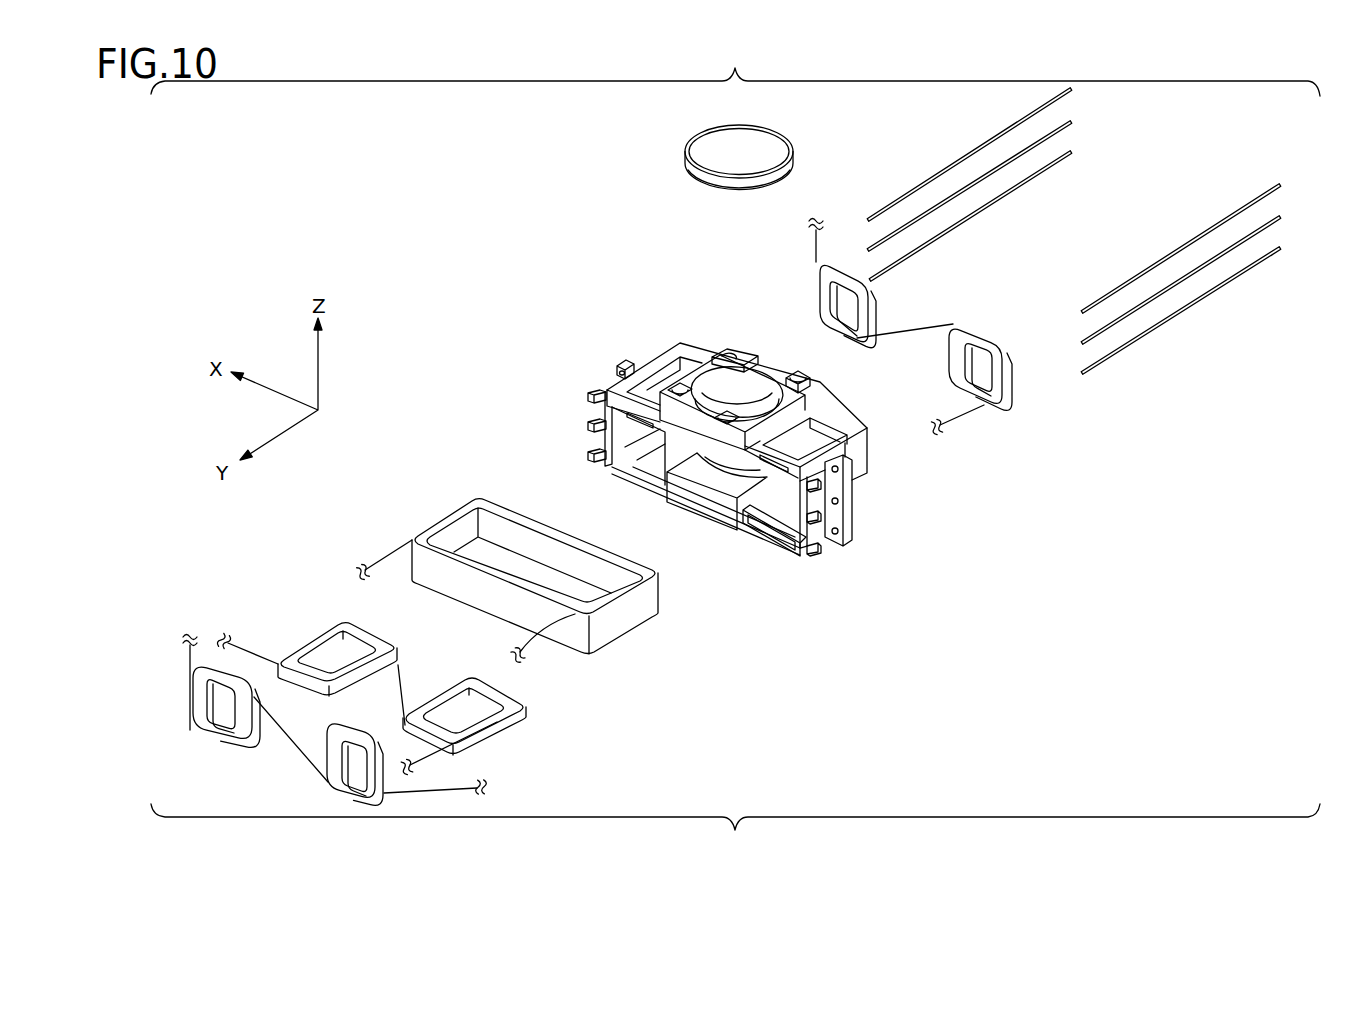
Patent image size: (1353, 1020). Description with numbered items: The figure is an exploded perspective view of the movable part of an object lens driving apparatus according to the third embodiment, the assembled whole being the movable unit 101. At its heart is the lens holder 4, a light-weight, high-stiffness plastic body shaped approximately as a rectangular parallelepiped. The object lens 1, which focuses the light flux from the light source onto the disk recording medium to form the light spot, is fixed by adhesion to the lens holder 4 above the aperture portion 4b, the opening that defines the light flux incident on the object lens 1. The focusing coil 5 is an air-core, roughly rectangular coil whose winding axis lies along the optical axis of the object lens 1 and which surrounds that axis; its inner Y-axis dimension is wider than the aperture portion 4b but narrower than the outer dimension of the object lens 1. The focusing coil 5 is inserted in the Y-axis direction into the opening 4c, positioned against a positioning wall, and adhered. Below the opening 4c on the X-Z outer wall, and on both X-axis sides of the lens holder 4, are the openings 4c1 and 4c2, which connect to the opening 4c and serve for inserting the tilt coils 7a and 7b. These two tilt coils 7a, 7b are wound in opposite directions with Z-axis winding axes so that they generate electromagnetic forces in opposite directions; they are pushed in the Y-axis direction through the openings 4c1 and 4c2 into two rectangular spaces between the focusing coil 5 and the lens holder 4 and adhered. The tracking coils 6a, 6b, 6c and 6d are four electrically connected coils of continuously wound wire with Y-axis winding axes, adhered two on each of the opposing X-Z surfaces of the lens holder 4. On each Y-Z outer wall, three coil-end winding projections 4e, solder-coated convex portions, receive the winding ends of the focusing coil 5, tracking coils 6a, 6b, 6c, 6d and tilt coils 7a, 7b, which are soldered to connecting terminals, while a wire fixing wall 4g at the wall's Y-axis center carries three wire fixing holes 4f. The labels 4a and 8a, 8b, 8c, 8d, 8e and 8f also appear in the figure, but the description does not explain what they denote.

The object lens 1 is at (739, 142).
The lens holder 4 is at (676, 353).
The coil accommodating opening 4a is at (672, 373).
The aperture portion 4b is at (760, 400).
The opening 4c is at (622, 437).
The opening 4c1 is at (655, 493).
The opening 4c2 is at (758, 522).
The coil-end winding projections 4e is at (588, 455).
The wire fixing holes 4f is at (839, 531).
The wire fixing wall 4g is at (620, 362).
The focusing coil 5 is at (437, 517).
The tracking coil 6a is at (215, 738).
The tracking coil 6b is at (352, 800).
The tracking coil 6c is at (984, 414).
The tracking coil 6d is at (814, 299).
The tilt coil 7a is at (303, 643).
The tilt coil 7b is at (497, 725).
The wire 8a is at (1072, 89).
The wire 8b is at (1072, 122).
The wire 8c is at (1072, 152).
The wire 8d is at (1240, 208).
The wire 8e is at (1277, 218).
The wire 8f is at (1268, 258).
The movable unit 101 is at (784, 848).